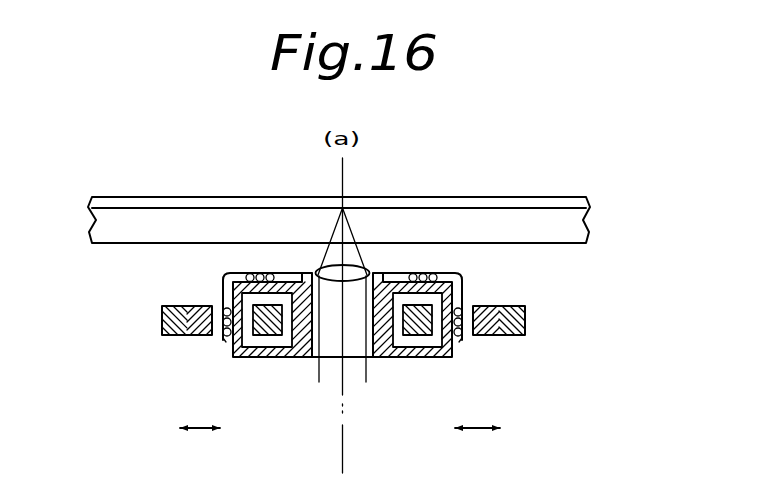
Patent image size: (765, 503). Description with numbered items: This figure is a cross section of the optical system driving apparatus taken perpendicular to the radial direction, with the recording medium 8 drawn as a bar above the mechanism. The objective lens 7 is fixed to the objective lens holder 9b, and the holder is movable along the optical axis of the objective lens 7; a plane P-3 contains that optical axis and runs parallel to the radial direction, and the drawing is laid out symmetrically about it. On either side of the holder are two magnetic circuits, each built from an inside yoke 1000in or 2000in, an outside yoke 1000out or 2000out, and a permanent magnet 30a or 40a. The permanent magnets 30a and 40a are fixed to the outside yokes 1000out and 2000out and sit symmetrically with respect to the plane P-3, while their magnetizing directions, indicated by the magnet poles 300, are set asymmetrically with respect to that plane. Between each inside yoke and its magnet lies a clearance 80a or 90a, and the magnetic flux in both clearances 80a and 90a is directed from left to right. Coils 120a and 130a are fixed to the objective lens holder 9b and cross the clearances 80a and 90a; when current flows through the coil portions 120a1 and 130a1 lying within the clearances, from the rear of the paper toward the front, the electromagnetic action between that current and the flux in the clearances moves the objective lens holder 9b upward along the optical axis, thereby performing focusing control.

The guide rail 8 is at (142, 201).
The objective lens 7 is at (350, 272).
The objective lens holder 9b is at (388, 282).
The coil 120a is at (241, 273).
The portion of coil 120a 120a1 is at (224, 306).
The coil 130a is at (447, 273).
The portion of coil 130a 130a1 is at (468, 300).
The permanent magnet 30a is at (190, 325).
The permanent magnet 40a is at (487, 337).
The clearance 80a is at (222, 338).
The clearance 90a is at (458, 338).
The inside yoke 1000in is at (260, 326).
The outside yoke 1000out is at (162, 306).
The inside yoke 2000in is at (413, 328).
The outside yoke 2000out is at (527, 306).
The magnet 300 is at (483, 460).
The plane P-3 is at (340, 426).